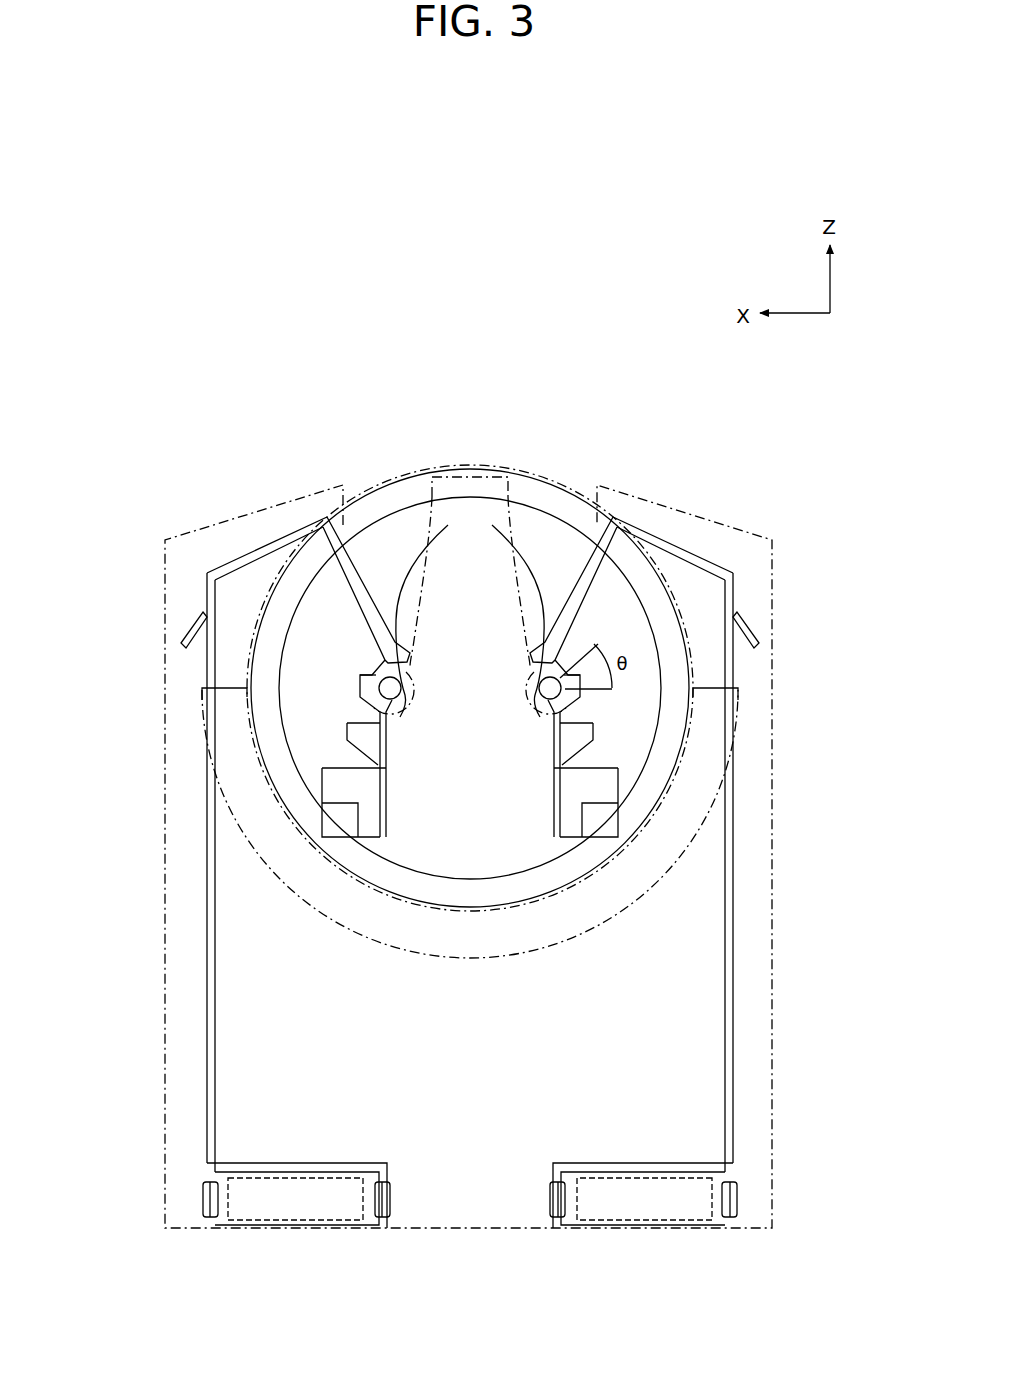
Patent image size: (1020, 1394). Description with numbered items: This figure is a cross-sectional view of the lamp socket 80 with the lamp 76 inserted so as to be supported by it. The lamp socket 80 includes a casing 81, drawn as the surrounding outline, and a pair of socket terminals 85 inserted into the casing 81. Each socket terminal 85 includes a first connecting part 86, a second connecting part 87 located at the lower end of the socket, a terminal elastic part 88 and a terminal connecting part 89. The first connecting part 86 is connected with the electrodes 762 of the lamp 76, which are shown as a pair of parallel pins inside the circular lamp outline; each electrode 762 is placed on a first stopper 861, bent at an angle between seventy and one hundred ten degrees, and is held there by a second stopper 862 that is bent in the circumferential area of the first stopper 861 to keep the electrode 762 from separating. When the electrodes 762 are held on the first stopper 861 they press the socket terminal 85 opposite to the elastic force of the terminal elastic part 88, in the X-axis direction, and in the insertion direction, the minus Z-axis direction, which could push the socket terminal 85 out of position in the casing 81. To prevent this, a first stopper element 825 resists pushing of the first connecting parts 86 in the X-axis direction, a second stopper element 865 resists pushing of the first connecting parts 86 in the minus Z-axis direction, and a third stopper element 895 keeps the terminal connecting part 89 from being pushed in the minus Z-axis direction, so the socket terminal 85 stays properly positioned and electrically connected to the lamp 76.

The lamp socket 80 is at (549, 331).
The casing 81 is at (160, 998).
The lamp 76 is at (582, 486).
The socket terminal 85 is at (203, 922).
The terminal connecting part 89 is at (207, 828).
The terminal elastic part 88 is at (287, 545).
The third stopper element 895 is at (183, 642).
The first connecting part 86 is at (420, 384).
The first stopper 861 is at (368, 675).
The second stopper 862 is at (427, 500).
The electrode 762 is at (207, 690).
The first stopper element 825 is at (568, 728).
The second stopper element 865 is at (612, 824).
The second connecting part 87 is at (222, 1230).